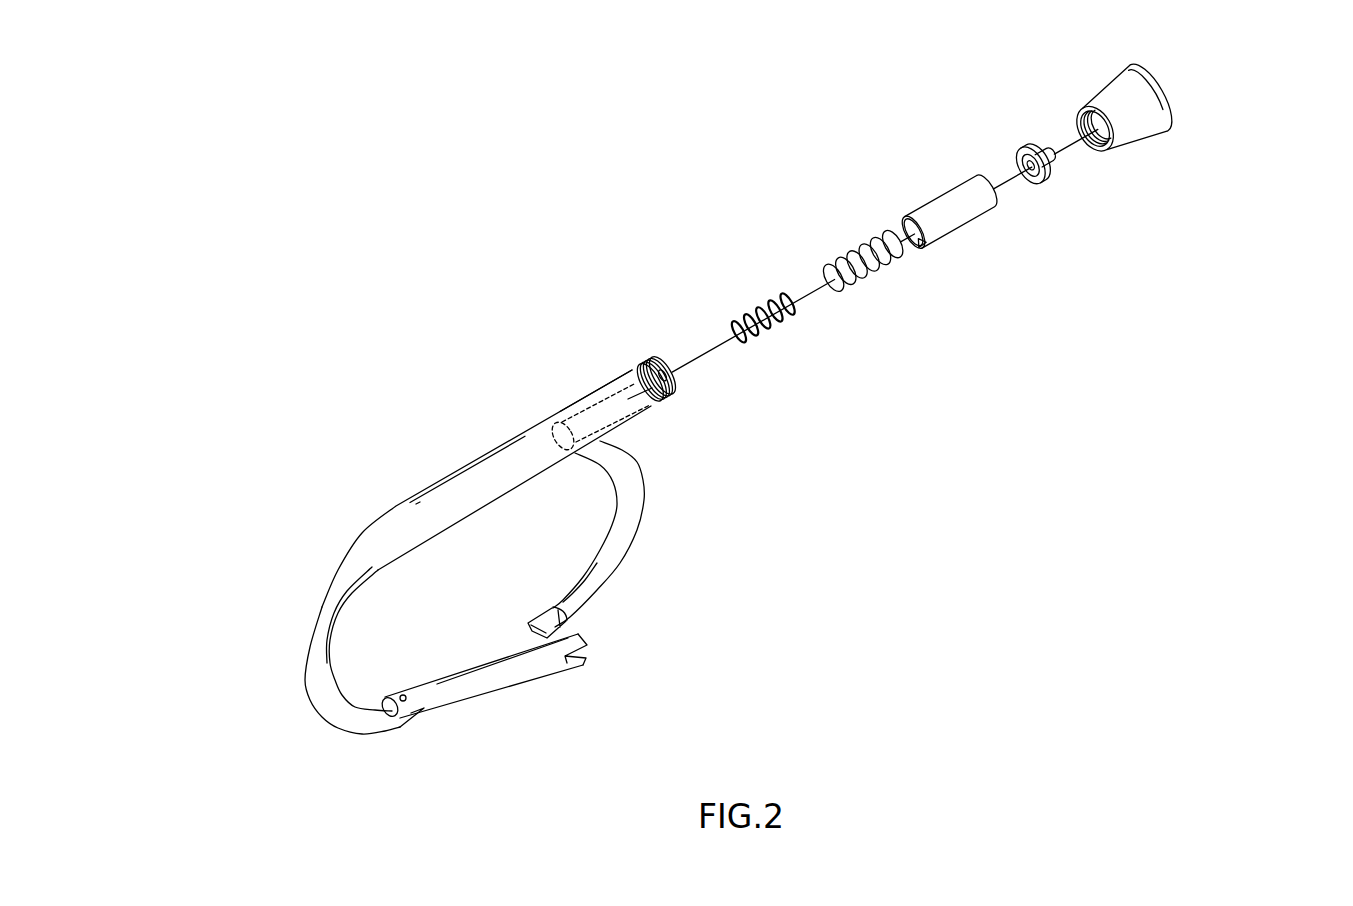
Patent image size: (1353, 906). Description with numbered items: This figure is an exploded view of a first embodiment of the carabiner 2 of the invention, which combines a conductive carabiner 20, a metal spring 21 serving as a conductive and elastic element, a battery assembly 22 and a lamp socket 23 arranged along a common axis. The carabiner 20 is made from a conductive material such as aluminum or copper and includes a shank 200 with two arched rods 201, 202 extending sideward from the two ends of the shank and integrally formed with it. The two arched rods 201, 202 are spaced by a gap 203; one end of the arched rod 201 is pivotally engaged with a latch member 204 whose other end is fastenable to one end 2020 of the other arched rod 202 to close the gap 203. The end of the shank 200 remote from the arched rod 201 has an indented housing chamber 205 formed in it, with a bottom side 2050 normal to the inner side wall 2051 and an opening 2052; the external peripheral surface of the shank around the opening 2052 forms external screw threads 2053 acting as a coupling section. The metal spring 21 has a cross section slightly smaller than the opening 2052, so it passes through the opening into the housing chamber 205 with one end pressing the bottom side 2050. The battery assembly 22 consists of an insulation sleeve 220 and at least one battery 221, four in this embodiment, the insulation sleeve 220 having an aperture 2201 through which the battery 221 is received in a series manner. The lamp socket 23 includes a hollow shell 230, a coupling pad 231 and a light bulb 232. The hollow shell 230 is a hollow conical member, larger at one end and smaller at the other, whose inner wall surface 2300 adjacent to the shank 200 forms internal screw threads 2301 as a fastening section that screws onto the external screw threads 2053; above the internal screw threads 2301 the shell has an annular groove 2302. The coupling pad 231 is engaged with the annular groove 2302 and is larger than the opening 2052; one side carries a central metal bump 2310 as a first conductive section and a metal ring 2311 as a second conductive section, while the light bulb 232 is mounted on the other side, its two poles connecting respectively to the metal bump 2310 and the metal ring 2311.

The flashlight carabiner assembly 2 is at (607, 230).
The carabiner 20 is at (520, 516).
The shank 200 is at (481, 508).
The arched rod 201 is at (310, 687).
The arched rod 202 is at (641, 503).
The end of arched rod 2020 is at (570, 603).
The gap 203 is at (533, 642).
The latch member 204 is at (626, 647).
The housing chamber 205 is at (699, 362).
The bottom side 2050 is at (563, 422).
The inner side wall 2051 is at (598, 390).
The opening 2052 is at (664, 366).
The external screw threads 2053 is at (655, 379).
The metal spring 21 is at (766, 296).
The battery assembly 22 is at (923, 240).
The insulation sleeve 220 is at (950, 211).
The aperture 2201 is at (921, 241).
The battery 221 is at (863, 261).
The lamp socket 23 is at (1089, 151).
The hollow shell 230 is at (1121, 114).
The inner wall surface 2300 is at (1095, 129).
The internal screw threads 2301 is at (1095, 128).
The annular groove 2302 is at (1094, 129).
The coupling pad 231 is at (1033, 164).
The metal bump 2310 is at (1031, 165).
The metal ring 2311 is at (1031, 165).
The light bulb 232 is at (1046, 156).